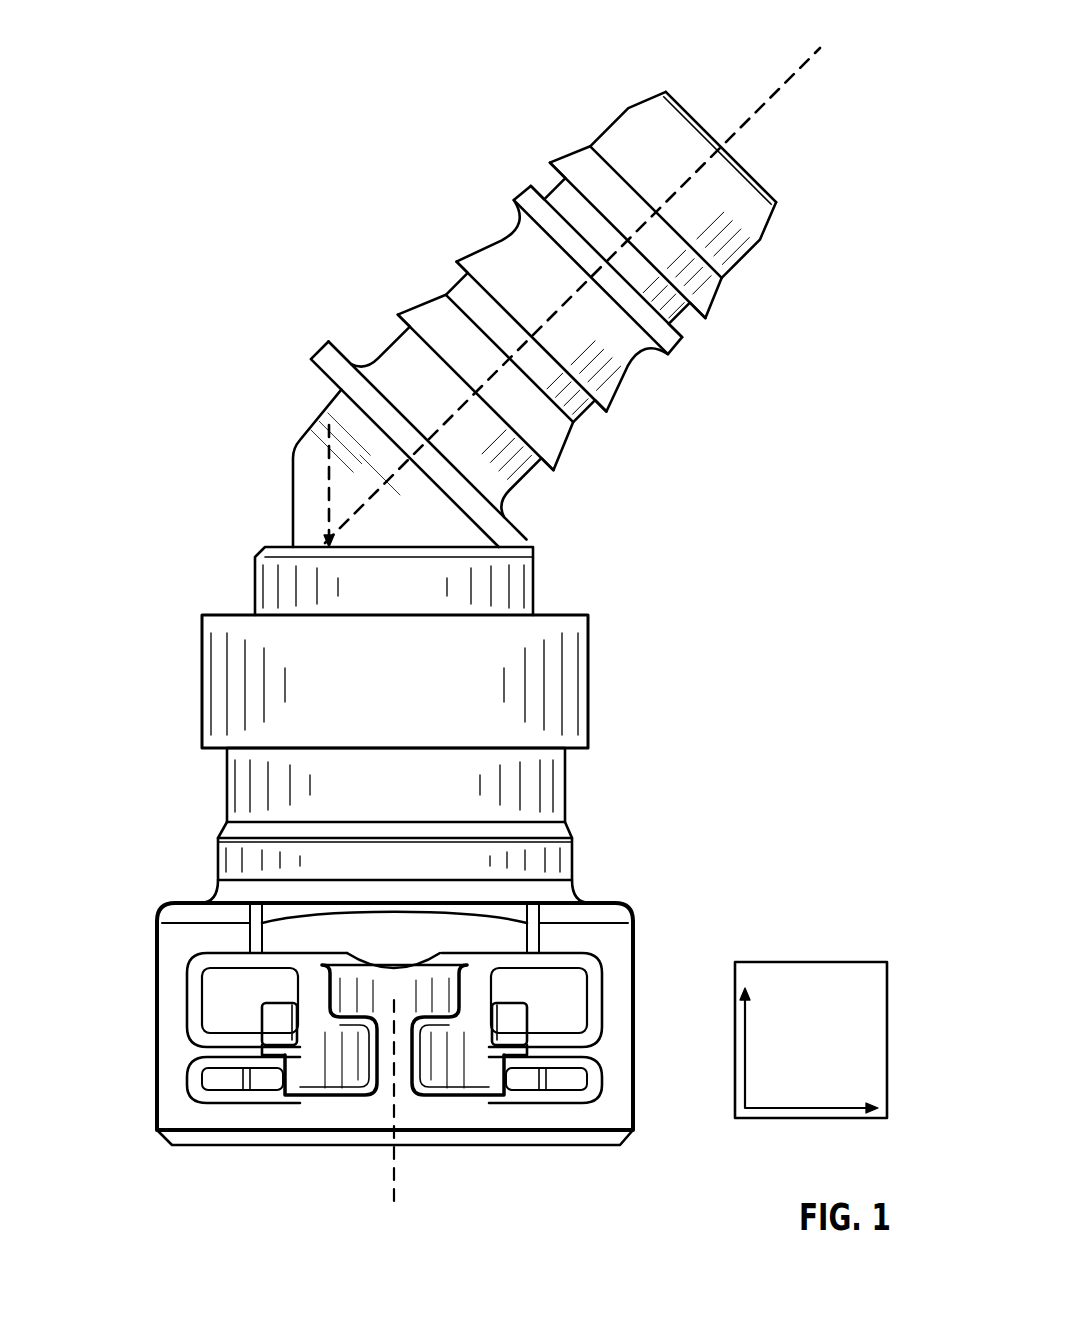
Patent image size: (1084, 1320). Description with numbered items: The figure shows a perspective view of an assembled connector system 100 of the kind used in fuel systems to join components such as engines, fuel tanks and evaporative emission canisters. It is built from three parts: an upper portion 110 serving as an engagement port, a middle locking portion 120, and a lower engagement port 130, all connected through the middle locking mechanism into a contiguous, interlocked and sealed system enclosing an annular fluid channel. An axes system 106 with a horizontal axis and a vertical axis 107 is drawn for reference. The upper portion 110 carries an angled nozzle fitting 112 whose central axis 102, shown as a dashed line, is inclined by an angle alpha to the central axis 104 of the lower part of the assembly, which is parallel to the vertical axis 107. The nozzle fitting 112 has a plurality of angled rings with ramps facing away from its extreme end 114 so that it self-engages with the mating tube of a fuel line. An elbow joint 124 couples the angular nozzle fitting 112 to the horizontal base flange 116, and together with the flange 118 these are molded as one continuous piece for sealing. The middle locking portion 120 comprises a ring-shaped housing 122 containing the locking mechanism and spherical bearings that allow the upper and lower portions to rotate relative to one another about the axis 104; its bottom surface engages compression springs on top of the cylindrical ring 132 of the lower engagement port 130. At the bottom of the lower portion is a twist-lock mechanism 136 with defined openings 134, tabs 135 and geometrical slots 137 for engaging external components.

The connector system 100 is at (777, 36).
The central axis 102 is at (768, 108).
The central axis 104 is at (395, 1175).
The axes system 106 is at (770, 962).
The vertical axis 107 is at (745, 1052).
The upper portion 110 is at (634, 90).
The nozzle fitting 112 is at (488, 222).
The extreme end 114 is at (772, 185).
The horizontal base flange 116 is at (538, 588).
The flange 118 is at (322, 352).
The middle locking portion 120 is at (630, 680).
The ring-shaped housing 122 is at (200, 711).
The elbow joint 124 is at (291, 497).
The lower engagement port 130 is at (655, 1072).
The cylindrical ring 132 is at (227, 795).
The defined openings 134 is at (560, 992).
The tabs 135 is at (283, 1075).
The twist-lock mechanism 136 is at (645, 988).
The geometrical slots 137 is at (530, 1082).